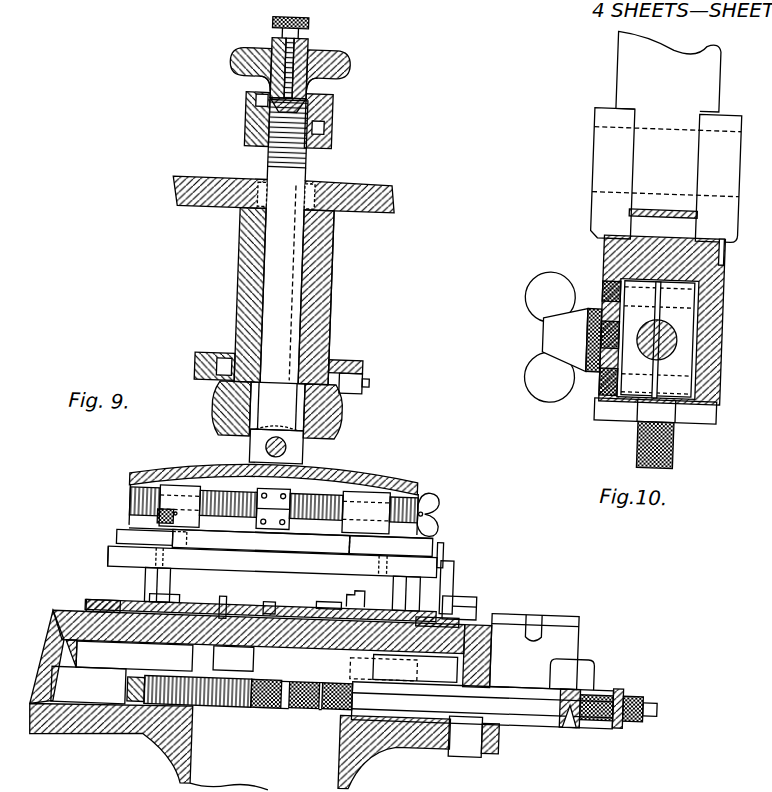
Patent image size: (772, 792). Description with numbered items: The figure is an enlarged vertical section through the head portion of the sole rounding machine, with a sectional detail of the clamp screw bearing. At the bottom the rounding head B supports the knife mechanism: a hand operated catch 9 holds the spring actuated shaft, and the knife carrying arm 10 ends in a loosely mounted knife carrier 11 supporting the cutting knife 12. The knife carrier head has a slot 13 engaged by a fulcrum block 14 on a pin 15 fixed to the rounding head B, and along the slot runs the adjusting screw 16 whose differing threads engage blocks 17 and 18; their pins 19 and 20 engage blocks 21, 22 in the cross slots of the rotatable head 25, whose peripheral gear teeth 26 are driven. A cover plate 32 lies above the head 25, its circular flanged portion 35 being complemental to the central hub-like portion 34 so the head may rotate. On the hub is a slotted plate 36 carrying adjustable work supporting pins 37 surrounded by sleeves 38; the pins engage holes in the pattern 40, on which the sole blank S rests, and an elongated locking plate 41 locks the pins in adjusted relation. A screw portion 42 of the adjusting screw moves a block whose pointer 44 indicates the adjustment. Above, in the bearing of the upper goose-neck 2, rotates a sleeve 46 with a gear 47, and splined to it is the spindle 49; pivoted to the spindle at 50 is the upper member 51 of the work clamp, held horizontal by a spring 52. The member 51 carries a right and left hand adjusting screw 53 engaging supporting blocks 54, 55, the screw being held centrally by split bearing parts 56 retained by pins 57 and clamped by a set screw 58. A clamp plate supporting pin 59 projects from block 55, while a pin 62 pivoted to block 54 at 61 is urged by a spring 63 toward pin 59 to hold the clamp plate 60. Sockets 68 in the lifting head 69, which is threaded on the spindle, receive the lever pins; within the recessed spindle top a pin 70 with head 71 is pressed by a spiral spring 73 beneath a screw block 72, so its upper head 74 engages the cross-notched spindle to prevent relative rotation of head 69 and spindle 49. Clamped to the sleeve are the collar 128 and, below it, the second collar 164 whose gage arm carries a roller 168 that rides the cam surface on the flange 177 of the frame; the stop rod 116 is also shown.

In FIG. 9, the upper goose-neck 2 is at (331, 278).
In FIG. 9, the hand operated catch 9 is at (585, 655).
In FIG. 9, the knife carrying arm 10 is at (300, 411).
In FIG. 9, the knife carrier 11 is at (463, 578).
In FIG. 9, the cutting knife 12 is at (452, 545).
In FIG. 9, the slot 13 is at (555, 716).
In FIG. 9, the fulcrum block 14 is at (512, 724).
In FIG. 9, the pin 15 is at (480, 750).
In FIG. 9, the adjusting screw 16 is at (390, 700).
In FIG. 9, the block 17 is at (275, 708).
In FIG. 9, the block 18 is at (315, 708).
In FIG. 9, the pin 19 is at (280, 668).
In FIG. 9, the pin 20 is at (415, 665).
In FIG. 9, the block 21 is at (223, 657).
In FIG. 9, the block 22 is at (384, 665).
In FIG. 9, the rotatable head 25 is at (122, 672).
In FIG. 9, the gear teeth 26 is at (503, 656).
In FIG. 9, the cover plate 32 is at (60, 620).
In FIG. 9, the hub-like portion 34 is at (235, 590).
In FIG. 9, the circular flanged portion 35 is at (340, 614).
In FIG. 9, the slotted plate 36 is at (104, 608).
In FIG. 9, the work supporting pins 37 is at (190, 590).
In FIG. 9, the sleeves 38 is at (155, 586).
In FIG. 9, the pattern 40 is at (273, 558).
In FIG. 9, the locking plate 41 is at (258, 612).
In FIG. 9, the screw portion 42 is at (612, 690).
In FIG. 9, the pointer 44 is at (584, 718).
In FIG. 9, the sleeve 46 is at (318, 248).
In FIG. 9, the gear 47 is at (394, 190).
In FIG. 9, the spindle 49 is at (301, 165).
In FIG. 10, the spindle 49 is at (622, 66).
In FIG. 9, the pivot 50 is at (292, 448).
In FIG. 10, the pivot 50 is at (600, 148).
In FIG. 9, the upper member of the work clamp 51 is at (177, 490).
In FIG. 10, the upper member of the work clamp 51 is at (604, 258).
In FIG. 9, the spring 52 is at (236, 476).
In FIG. 10, the spring 52 is at (640, 212).
In FIG. 9, the adjusting screw 53 is at (430, 489).
In FIG. 9, the supporting block 54 is at (140, 488).
In FIG. 10, the supporting block 54 is at (600, 413).
In FIG. 9, the supporting block 55 is at (385, 488).
In FIG. 10, the split bearing parts 56 is at (683, 333).
In FIG. 10, the pins 57 is at (722, 283).
In FIG. 10, the set screw 58 is at (556, 335).
In FIG. 9, the clamp plate supporting pin 59 is at (365, 545).
In FIG. 9, the clamp plate 60 is at (441, 533).
In FIG. 9, the pivot 61 is at (184, 519).
In FIG. 9, the clamp plate supporting pin 62 is at (125, 540).
In FIG. 9, the spring 63 is at (137, 519).
In FIG. 9, the sockets 68 is at (239, 116).
In FIG. 9, the lifting head 69 is at (312, 82).
In FIG. 9, the pin 70 is at (296, 72).
In FIG. 9, the head 71 is at (258, 84).
In FIG. 9, the screw block 72 is at (270, 55).
In FIG. 9, the spiral spring 73 is at (240, 52).
In FIG. 9, the head 74 is at (299, 22).
In FIG. 9, the stop rod 116 is at (197, 367).
In FIG. 9, the collar or carrying member 128 is at (346, 402).
In FIG. 9, the second collar 164 is at (346, 427).
In FIG. 9, the roller 168 is at (366, 378).
In FIG. 9, the flange 177 is at (352, 360).
In FIG. 9, the sole blank S is at (117, 556).
In FIG. 9, the rounding head B is at (412, 745).